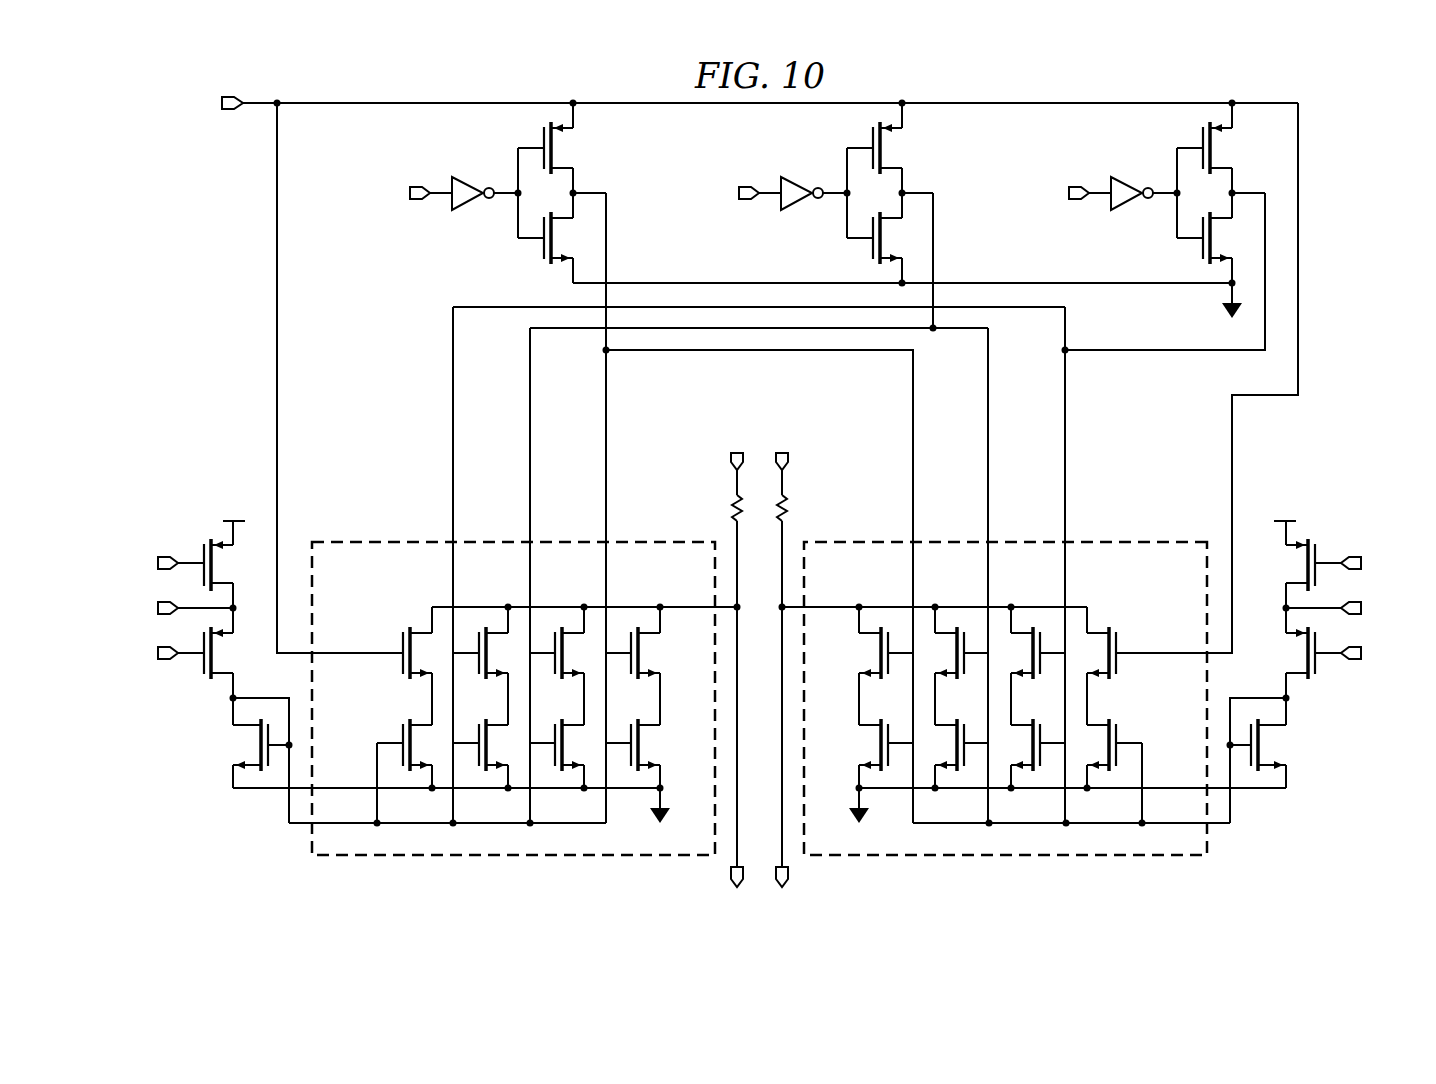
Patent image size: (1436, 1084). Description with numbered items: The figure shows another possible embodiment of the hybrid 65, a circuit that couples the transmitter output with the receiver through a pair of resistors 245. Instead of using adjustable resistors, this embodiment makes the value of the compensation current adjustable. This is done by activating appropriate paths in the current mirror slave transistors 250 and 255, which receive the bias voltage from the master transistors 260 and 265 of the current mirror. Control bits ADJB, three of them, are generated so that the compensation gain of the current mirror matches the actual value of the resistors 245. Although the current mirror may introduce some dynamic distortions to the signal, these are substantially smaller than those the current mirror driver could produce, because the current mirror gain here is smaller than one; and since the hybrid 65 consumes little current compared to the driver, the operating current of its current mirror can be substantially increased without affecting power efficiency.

The hybrid 65 is at (1376, 179).
The resistors 245 is at (733, 509).
The current mirror slave transistors 250 is at (500, 862).
The current mirror slave transistors 255 is at (1019, 862).
The master transistors 260 is at (216, 751).
The master transistors 265 is at (1303, 751).